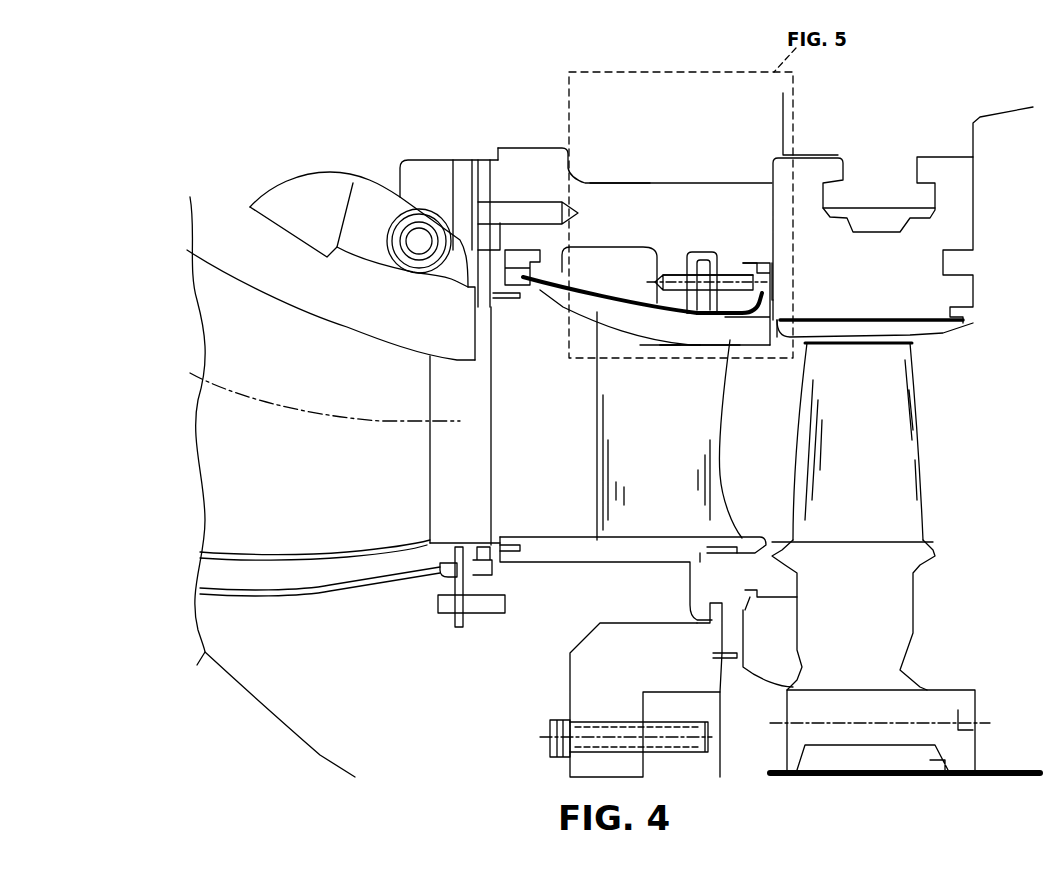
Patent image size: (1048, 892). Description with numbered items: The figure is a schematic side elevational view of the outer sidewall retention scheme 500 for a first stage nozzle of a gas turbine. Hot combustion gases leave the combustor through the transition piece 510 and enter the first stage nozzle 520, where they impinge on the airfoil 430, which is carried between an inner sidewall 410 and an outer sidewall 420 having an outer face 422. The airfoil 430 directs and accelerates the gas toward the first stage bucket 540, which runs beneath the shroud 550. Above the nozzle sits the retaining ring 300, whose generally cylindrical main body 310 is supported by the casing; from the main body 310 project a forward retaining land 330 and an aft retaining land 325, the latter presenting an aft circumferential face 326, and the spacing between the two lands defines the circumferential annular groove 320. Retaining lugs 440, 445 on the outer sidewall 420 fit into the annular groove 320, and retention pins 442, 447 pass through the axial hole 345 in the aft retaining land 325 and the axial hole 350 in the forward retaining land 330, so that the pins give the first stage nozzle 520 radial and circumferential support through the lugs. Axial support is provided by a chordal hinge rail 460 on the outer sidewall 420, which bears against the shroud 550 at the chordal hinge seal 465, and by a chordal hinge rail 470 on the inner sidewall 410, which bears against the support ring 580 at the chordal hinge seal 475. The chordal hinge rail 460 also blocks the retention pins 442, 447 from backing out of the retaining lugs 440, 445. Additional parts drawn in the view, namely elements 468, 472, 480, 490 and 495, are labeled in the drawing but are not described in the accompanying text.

The retaining ring 300 is at (620, 168).
The main body 310 is at (612, 193).
The circumferential annular groove 320 is at (738, 262).
The aft retaining land 325 is at (770, 278).
The aft circumferential face 326 is at (748, 232).
The forward retaining land 330 is at (667, 268).
The axial hole 345 is at (720, 340).
The axial hole 350 is at (660, 315).
The inner sidewall 410 is at (549, 567).
The outer sidewall 420 is at (595, 313).
The outer face 422 is at (647, 305).
The airfoil 430 is at (617, 347).
The retaining lug 440 is at (750, 245).
The retaining lug 445 is at (748, 250).
The retention pin 442 is at (680, 340).
The retention pin 447 is at (681, 338).
The chordal hinge rail 460 is at (825, 340).
The chordal hinge seal 465 is at (767, 287).
The shroud seal land 468 is at (763, 312).
The chordal hinge rail 470 is at (687, 577).
The inner seal 472 is at (700, 578).
The chordal hinge seal 475 is at (700, 600).
The bolt 480 is at (512, 250).
The retaining pin 490 is at (697, 257).
The retaining pin 495 is at (698, 259).
The outer sidewall retention scheme 500 is at (680, 49).
The transition piece 510 is at (247, 352).
The first stage nozzle 520 is at (575, 442).
The first stage bucket 540 is at (893, 407).
The shroud 550 is at (865, 253).
The support ring 580 is at (567, 692).